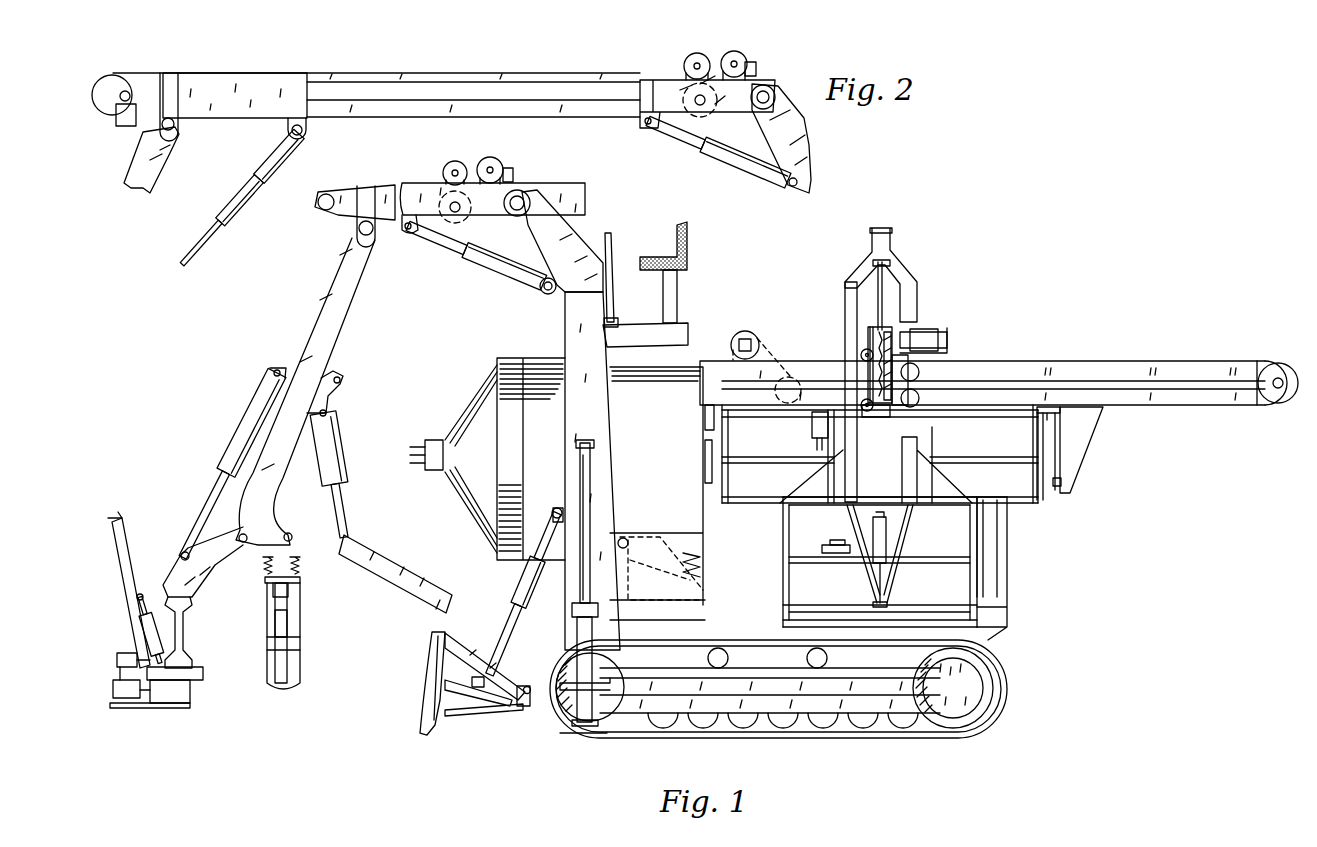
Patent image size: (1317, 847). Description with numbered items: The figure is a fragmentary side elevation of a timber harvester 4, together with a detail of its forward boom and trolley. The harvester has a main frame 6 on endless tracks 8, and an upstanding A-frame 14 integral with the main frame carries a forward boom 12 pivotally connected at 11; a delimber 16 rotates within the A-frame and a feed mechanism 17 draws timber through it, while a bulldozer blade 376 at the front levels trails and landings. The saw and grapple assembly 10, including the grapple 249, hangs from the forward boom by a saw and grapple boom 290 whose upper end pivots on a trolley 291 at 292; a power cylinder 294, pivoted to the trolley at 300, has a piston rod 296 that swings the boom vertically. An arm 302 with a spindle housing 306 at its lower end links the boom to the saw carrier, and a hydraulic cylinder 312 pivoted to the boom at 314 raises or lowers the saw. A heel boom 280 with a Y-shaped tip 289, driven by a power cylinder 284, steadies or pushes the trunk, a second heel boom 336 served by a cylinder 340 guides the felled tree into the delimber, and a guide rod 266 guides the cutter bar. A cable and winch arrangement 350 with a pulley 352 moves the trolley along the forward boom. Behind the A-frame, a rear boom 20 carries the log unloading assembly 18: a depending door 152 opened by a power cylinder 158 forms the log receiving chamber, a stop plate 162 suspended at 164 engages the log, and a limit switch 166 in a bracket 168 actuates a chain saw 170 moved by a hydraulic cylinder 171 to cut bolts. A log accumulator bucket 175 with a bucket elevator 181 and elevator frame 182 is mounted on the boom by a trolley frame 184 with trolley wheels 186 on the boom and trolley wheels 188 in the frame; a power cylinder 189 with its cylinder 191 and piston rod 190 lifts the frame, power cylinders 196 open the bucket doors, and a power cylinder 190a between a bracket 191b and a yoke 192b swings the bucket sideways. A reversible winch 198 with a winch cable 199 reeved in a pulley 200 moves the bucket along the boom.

In FIG. 1, the timber harvester 4 is at (1020, 682).
In FIG. 1, the main frame 6 is at (662, 633).
In FIG. 1, the endless tracks 8 is at (561, 658).
In FIG. 1, the saw and grapple assembly 10 is at (171, 488).
In FIG. 1, the pivotal connection 11 is at (577, 294).
In FIG. 2, the forward boom 12 is at (490, 83).
In FIG. 1, the forward boom 12 is at (416, 190).
In FIG. 1, the A-frame 14 is at (570, 338).
In FIG. 1, the delimber 16 is at (508, 362).
In FIG. 1, the feed mechanism 17 is at (661, 447).
In FIG. 1, the log unloading assembly 18 is at (986, 303).
In FIG. 1, the rear boom 20 is at (1162, 357).
In FIG. 1, the depending door 152 is at (1027, 487).
In FIG. 1, the power cylinder 158 is at (815, 426).
In FIG. 1, the stop plate 162 is at (1040, 437).
In FIG. 1, the pivotal suspension 164 is at (1050, 409).
In FIG. 1, the limit switch 166 is at (1062, 482).
In FIG. 1, the bracket 168 is at (1092, 428).
In FIG. 1, the chain saw 170 is at (705, 410).
In FIG. 1, the hydraulic cylinder 171 is at (704, 461).
In FIG. 1, the log accumulator bucket 175 is at (983, 568).
In FIG. 1, the bucket elevator 181 is at (866, 343).
In FIG. 1, the elevator frame 182 is at (917, 283).
In FIG. 1, the trolley frame 184 is at (880, 417).
In FIG. 1, the trolley wheels 186 is at (920, 373).
In FIG. 1, the trolley wheels 188 is at (861, 354).
In FIG. 1, the power cylinder 189 is at (877, 390).
In FIG. 1, the piston rod 190 is at (885, 278).
In FIG. 1, the power cylinder 190a is at (921, 328).
In FIG. 1, the cylinder 191 is at (873, 383).
In FIG. 1, the bracket 191b is at (948, 352).
In FIG. 1, the yoke 192b is at (868, 328).
In FIG. 1, the power cylinders 196 is at (884, 545).
In FIG. 1, the reversible winch 198 is at (757, 318).
In FIG. 1, the winch cable 199 is at (1173, 360).
In FIG. 1, the pulley 200 is at (1288, 348).
In FIG. 1, the grapple 249 is at (310, 617).
In FIG. 1, the guide rod 266 is at (120, 700).
In FIG. 1, the heel boom 280 is at (126, 567).
In FIG. 1, the power cylinder 284 is at (145, 622).
In FIG. 1, the Y-shaped tip 289 is at (108, 521).
In FIG. 2, the saw and grapple boom 290 is at (150, 168).
In FIG. 1, the saw and grapple boom 290 is at (320, 285).
In FIG. 2, the trolley 291 is at (231, 92).
In FIG. 1, the trolley 291 is at (375, 190).
In FIG. 2, the pivotal connection 292 is at (180, 128).
In FIG. 2, the power cylinder 294 is at (248, 188).
In FIG. 2, the piston rod 296 is at (187, 257).
In FIG. 1, the piston rod 296 is at (353, 370).
In FIG. 2, the pivotal connection 300 is at (306, 131).
In FIG. 1, the arm 302 is at (196, 583).
In FIG. 1, the spindle housing 306 is at (182, 636).
In FIG. 1, the hydraulic cylinder 312 is at (243, 425).
In FIG. 1, the pivotal connection 314 is at (278, 369).
In FIG. 1, the heel boom 336 is at (392, 569).
In FIG. 1, the cylinder 340 is at (334, 451).
In FIG. 2, the cable and winch arrangement 350 is at (752, 52).
In FIG. 1, the cable and winch arrangement 350 is at (508, 158).
In FIG. 2, the pulley 352 is at (103, 90).
In FIG. 1, the bulldozer blade 376 is at (433, 668).